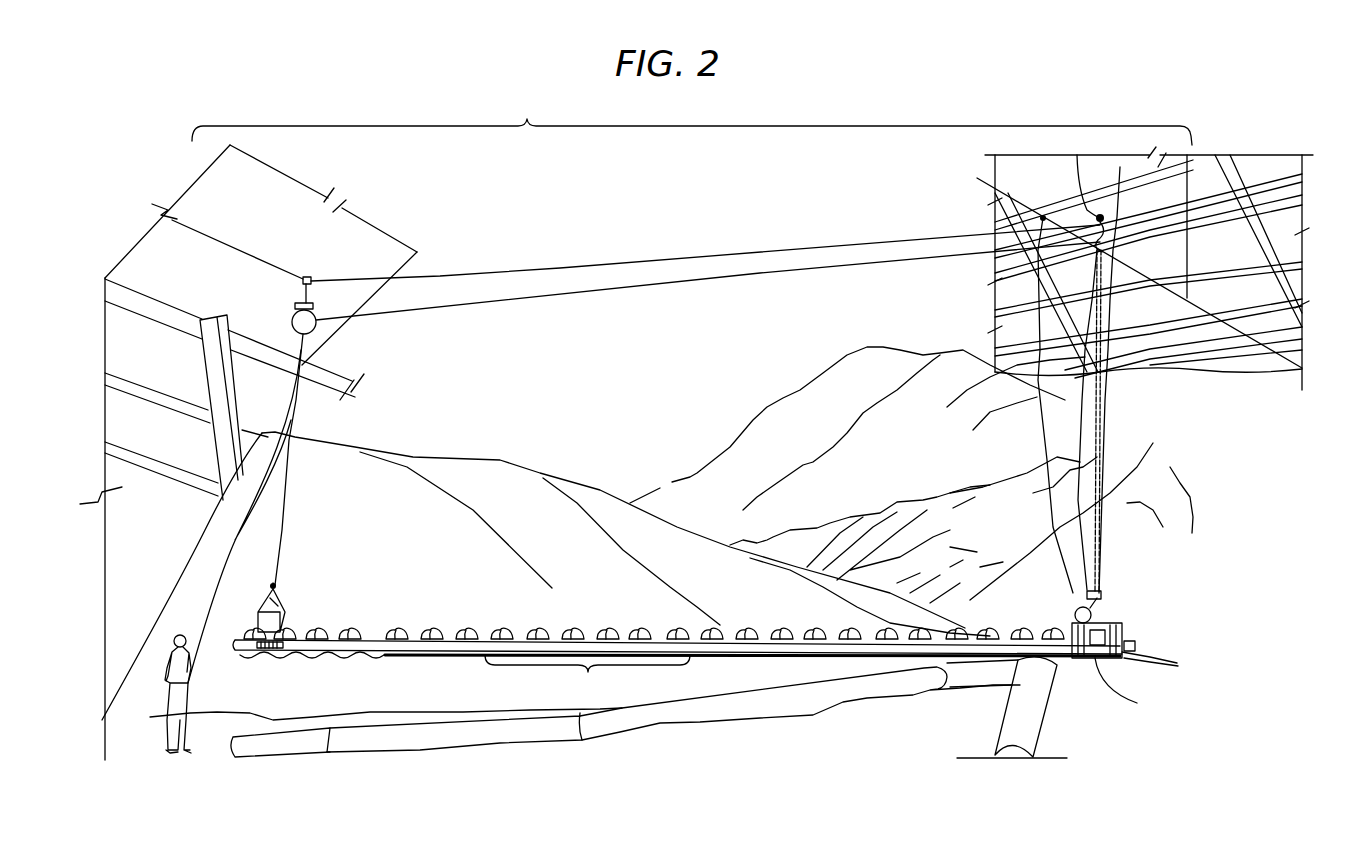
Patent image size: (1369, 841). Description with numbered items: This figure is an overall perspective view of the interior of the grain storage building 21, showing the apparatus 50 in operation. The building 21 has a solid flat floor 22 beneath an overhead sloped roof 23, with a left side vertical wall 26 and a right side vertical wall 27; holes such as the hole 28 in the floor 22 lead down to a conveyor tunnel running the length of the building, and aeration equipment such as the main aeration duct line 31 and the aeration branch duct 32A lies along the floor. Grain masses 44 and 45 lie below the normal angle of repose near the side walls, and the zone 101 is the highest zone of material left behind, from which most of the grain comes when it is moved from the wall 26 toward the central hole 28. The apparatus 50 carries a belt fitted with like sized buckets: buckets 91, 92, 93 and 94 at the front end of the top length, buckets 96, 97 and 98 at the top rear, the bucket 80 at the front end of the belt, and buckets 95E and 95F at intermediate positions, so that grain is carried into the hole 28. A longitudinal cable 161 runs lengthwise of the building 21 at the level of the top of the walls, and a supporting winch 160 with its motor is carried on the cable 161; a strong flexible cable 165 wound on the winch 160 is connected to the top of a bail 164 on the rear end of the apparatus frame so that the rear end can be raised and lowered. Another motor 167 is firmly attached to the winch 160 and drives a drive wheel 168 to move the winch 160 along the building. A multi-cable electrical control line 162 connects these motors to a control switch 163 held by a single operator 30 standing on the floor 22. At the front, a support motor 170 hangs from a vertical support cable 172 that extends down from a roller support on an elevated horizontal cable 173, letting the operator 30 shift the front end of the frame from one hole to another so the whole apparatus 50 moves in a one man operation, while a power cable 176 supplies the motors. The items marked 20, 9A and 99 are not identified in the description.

The grain storage building 21 is at (692, 123).
The overhead sloped roof 23 is at (428, 226).
The left side vertical wall 26 is at (180, 450).
The right side vertical wall 27 is at (1334, 397).
The longitudinal cable 161 is at (333, 282).
The motor 167 is at (314, 320).
The drive wheel 168 is at (302, 277).
The supporting winch 160 is at (294, 316).
The multi-cable electrical control line 162 is at (288, 403).
The control switch 163 is at (188, 683).
The bail 164 is at (263, 600).
The flexible cable 165 is at (280, 553).
The operator 30 is at (174, 754).
The zone 101 is at (388, 505).
The terrain slope 20 is at (484, 571).
The mass of grain 44 is at (479, 537).
The mass of grain 45 is at (1201, 517).
The elevated horizontal cable 173 is at (1142, 258).
The vertical support cable 172 is at (1098, 452).
The support motor 170 is at (1102, 587).
The conveyor section 9A is at (677, 660).
The ore piece / conveyor block 99 is at (242, 629).
The bucket 98 is at (290, 628).
The bucket 97 is at (326, 628).
The bucket 96 is at (358, 628).
The apparatus 50 is at (512, 627).
The bucket 95F is at (615, 620).
The bucket 95E is at (650, 629).
The bucket 94 is at (980, 630).
The bucket 93 is at (1016, 630).
The bucket 92 is at (1050, 630).
The bucket 91 is at (1098, 627).
The bucket 80 is at (1133, 645).
The hole 28 is at (1178, 667).
The power cable 176 is at (1140, 688).
The floor 22 is at (900, 767).
The aeration branch duct 32A is at (627, 716).
The main aeration duct line 31 is at (1003, 725).